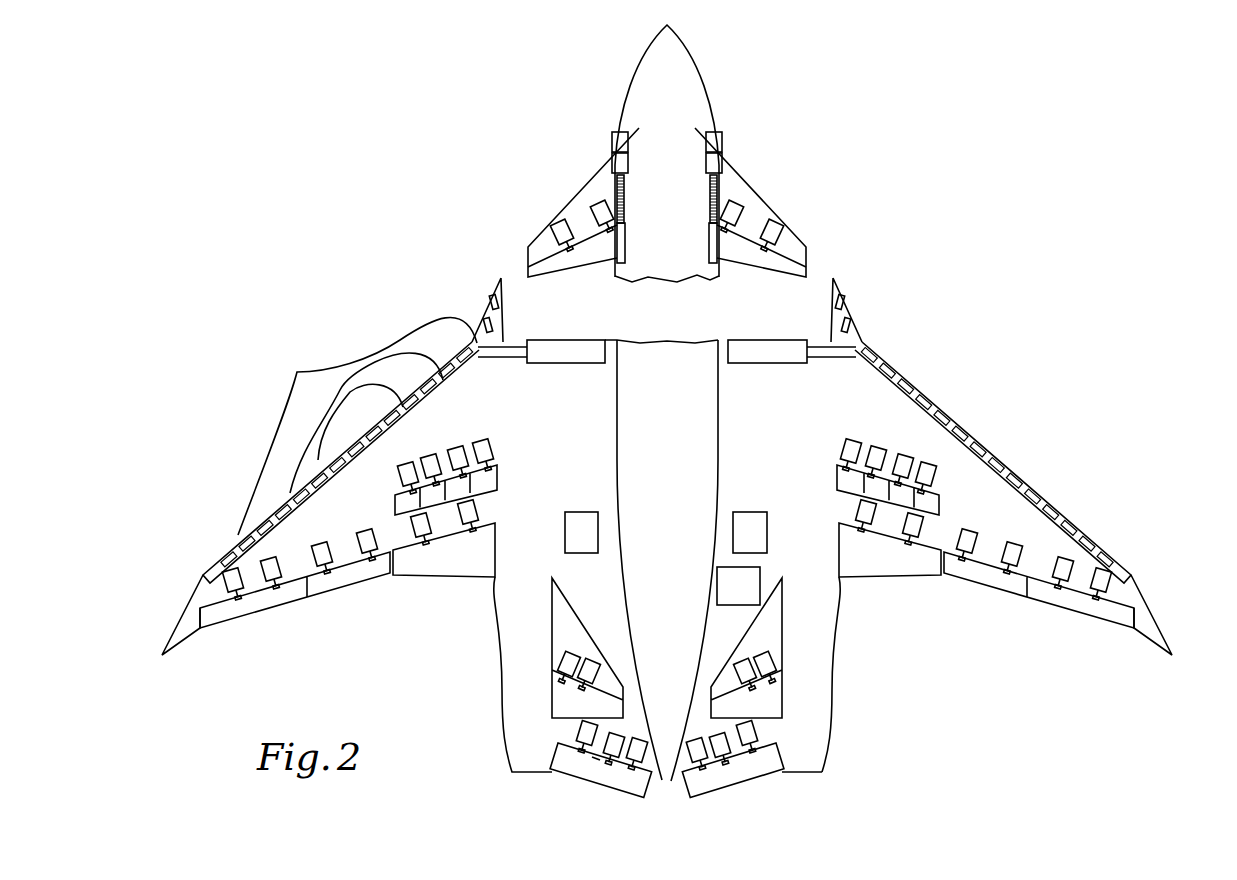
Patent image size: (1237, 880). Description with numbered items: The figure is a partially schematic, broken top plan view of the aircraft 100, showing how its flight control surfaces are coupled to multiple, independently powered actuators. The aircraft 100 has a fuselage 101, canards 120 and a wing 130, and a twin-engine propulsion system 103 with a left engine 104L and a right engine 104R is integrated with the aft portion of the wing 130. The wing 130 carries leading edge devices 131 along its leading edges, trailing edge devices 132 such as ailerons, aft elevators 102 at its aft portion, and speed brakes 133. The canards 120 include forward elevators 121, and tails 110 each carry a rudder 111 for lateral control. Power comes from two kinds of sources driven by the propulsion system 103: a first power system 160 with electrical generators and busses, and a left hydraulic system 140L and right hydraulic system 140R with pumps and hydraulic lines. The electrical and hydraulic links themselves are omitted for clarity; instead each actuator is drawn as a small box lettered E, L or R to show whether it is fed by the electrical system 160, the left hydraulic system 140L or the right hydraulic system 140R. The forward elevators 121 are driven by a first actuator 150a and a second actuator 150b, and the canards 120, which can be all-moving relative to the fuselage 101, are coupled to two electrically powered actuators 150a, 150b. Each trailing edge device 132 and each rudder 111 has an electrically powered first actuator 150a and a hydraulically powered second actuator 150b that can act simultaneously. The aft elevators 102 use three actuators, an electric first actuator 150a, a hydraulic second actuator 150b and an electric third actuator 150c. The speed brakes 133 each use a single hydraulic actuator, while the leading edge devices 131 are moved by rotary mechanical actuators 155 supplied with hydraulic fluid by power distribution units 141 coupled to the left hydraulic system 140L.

The aircraft 100 is at (772, 90).
The fuselage 101 is at (710, 90).
The aft elevators 102 is at (615, 782).
The twin-engine propulsion system 103 is at (853, 762).
The left engine 104L is at (515, 656).
The right engine 104R is at (812, 655).
The tails 110 is at (783, 636).
The rudder 111 is at (557, 695).
The canards 120 is at (733, 177).
The forward elevators 121 is at (553, 277).
The wing 130 is at (198, 536).
The leading edge devices 131 is at (297, 372).
The trailing edge devices 132 is at (300, 603).
The speed brakes 133 is at (503, 498).
The left hydraulic system 140L is at (563, 542).
The right hydraulic system 140R is at (750, 512).
The power distribution units 141 is at (578, 338).
The first actuator 150a is at (612, 137).
The second actuator 150b is at (1170, 583).
The third actuator 150c is at (592, 758).
The rotary mechanical actuators 155 is at (455, 370).
The first power system 160 is at (760, 570).